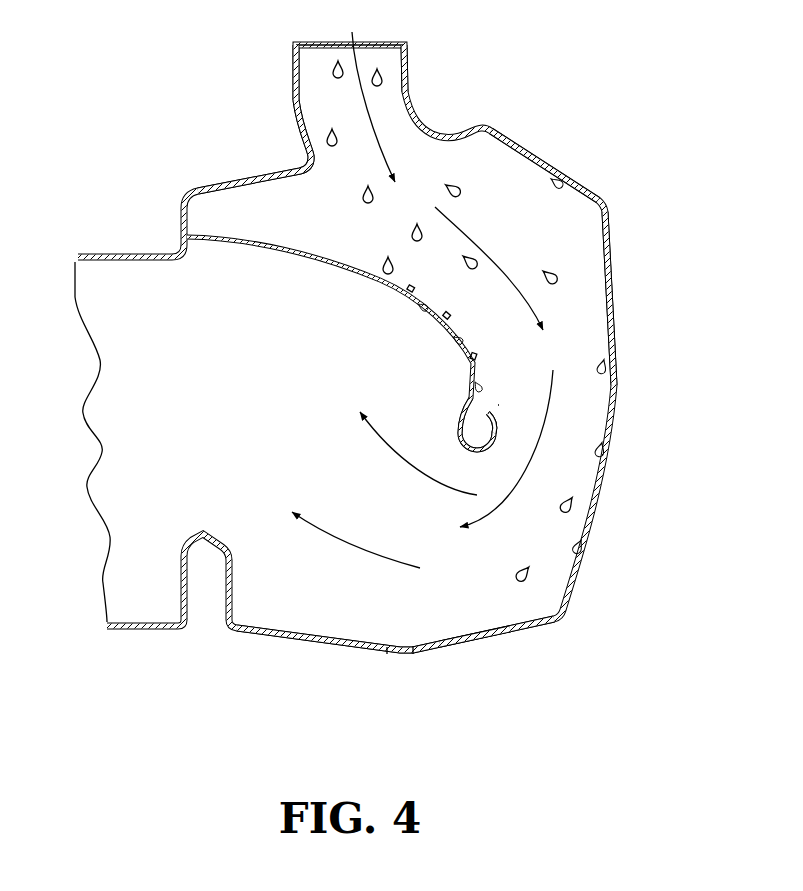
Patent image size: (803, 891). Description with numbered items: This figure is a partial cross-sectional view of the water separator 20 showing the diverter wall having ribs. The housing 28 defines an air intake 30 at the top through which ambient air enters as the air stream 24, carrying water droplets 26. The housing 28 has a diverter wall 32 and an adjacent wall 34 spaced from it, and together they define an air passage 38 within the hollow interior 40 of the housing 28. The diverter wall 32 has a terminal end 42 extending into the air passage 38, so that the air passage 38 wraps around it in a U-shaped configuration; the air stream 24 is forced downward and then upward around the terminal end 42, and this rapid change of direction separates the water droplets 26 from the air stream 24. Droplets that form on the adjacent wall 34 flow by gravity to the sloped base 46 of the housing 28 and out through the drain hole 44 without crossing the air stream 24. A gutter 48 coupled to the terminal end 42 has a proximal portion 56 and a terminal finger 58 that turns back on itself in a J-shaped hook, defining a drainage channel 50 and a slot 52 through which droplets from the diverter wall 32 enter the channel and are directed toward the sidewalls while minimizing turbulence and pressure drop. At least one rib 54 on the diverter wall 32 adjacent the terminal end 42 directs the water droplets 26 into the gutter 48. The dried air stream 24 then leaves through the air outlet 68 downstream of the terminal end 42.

The water separator 20 is at (215, 128).
The air stream 24 is at (480, 240).
The water droplets 26 is at (378, 83).
The housing 28 is at (625, 192).
The air intake 30 is at (377, 37).
The diverter wall 32 is at (290, 255).
The adjacent wall 34 is at (612, 330).
The air passage 38 is at (575, 325).
The hollow interior 40 is at (567, 178).
The terminal end 42 is at (448, 382).
The drain hole 44 is at (395, 652).
The base 46 is at (473, 639).
The gutter 48 is at (500, 405).
The drainage channel 50 is at (480, 433).
The slot 52 is at (487, 403).
The rib 54 is at (448, 318).
The proximal portion 56 is at (458, 415).
The terminal finger 58 is at (497, 423).
The air outlet 68 is at (132, 398).